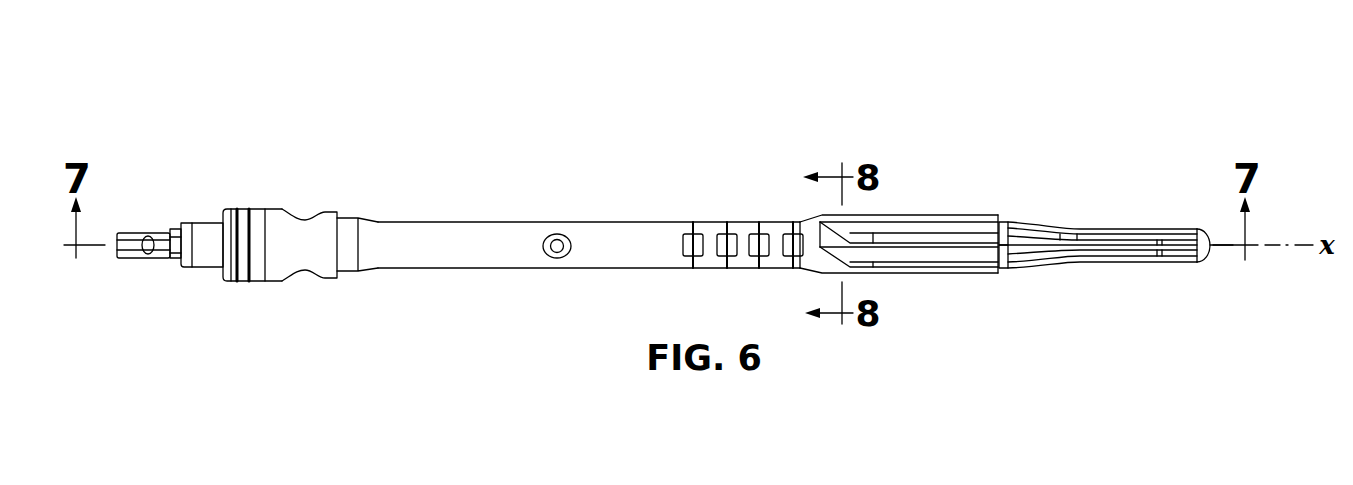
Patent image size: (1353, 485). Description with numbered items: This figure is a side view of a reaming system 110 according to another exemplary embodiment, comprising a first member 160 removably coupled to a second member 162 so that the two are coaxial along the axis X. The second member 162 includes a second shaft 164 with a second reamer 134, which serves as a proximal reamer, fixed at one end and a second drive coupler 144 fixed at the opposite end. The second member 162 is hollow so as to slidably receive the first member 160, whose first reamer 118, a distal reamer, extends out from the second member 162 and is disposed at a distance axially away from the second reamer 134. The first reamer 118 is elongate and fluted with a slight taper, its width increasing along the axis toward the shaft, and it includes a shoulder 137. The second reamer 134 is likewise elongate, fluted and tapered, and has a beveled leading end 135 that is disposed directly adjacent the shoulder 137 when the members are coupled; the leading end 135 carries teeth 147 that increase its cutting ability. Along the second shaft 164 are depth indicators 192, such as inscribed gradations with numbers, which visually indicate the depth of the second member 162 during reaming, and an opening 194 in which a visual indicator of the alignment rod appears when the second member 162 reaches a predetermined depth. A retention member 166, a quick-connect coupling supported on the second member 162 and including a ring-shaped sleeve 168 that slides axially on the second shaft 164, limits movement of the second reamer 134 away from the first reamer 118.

The system 110 is at (1202, 140).
The first reamer 118 is at (1112, 235).
The second reamer 134 is at (943, 228).
The leading end 135 is at (997, 226).
The shoulder 137 is at (1007, 273).
The second drive coupler 144 is at (125, 234).
The teeth 147 is at (1010, 250).
The first member 160 is at (1047, 213).
The second member 162 is at (910, 204).
The second shaft 164 is at (640, 238).
The retention member 166 is at (280, 218).
The sleeve 168 is at (310, 232).
The depth indicators 192 is at (808, 211).
The opening 194 is at (554, 233).